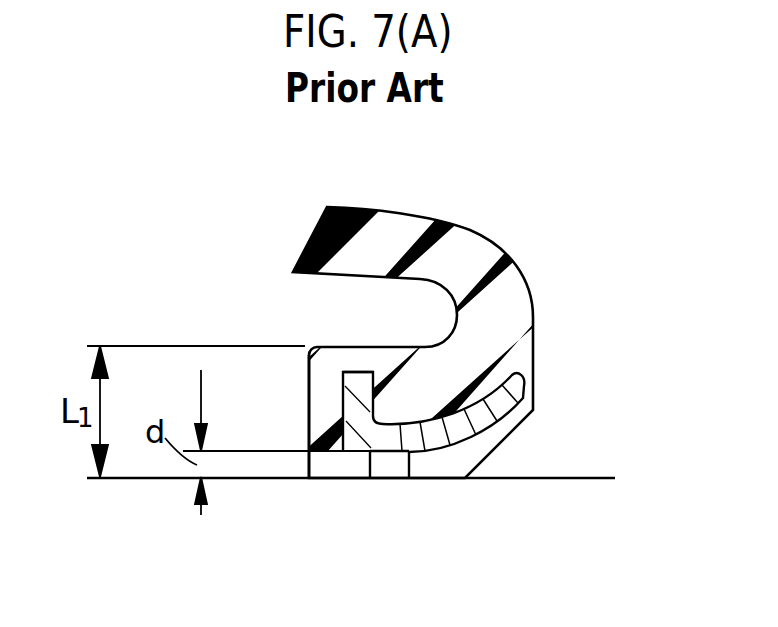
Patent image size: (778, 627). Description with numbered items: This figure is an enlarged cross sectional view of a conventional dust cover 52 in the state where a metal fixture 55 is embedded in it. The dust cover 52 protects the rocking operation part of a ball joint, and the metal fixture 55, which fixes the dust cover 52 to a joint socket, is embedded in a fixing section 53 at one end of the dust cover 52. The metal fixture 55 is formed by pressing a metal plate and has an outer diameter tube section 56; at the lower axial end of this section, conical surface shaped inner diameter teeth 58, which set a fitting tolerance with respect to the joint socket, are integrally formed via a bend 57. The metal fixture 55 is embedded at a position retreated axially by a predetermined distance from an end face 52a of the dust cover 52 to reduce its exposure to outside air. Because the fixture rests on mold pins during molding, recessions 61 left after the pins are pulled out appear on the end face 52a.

The dust cover 52 is at (470, 250).
The end face 52a is at (440, 480).
The fixing section 53 is at (327, 412).
The metal fixture 55 is at (357, 403).
The outer diameter tube section 56 is at (363, 388).
The bend 57 is at (355, 444).
The inner diameter teeth 58 is at (518, 386).
The recessions 61 is at (388, 465).